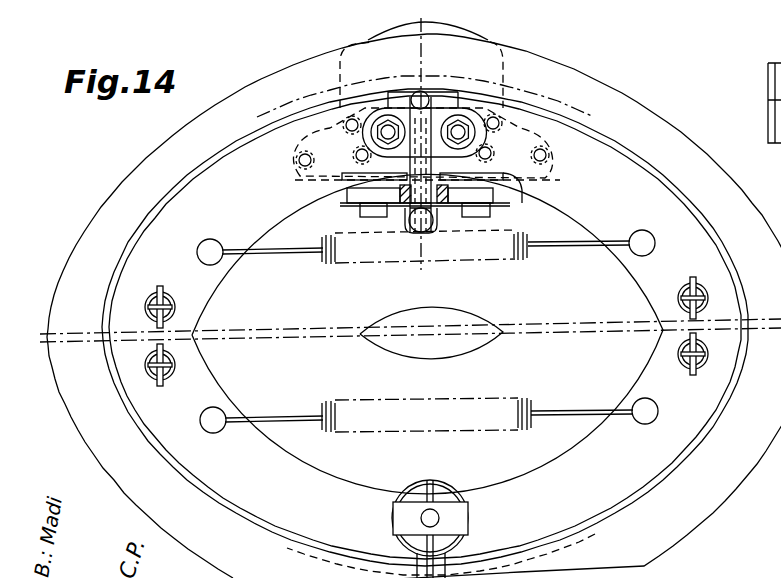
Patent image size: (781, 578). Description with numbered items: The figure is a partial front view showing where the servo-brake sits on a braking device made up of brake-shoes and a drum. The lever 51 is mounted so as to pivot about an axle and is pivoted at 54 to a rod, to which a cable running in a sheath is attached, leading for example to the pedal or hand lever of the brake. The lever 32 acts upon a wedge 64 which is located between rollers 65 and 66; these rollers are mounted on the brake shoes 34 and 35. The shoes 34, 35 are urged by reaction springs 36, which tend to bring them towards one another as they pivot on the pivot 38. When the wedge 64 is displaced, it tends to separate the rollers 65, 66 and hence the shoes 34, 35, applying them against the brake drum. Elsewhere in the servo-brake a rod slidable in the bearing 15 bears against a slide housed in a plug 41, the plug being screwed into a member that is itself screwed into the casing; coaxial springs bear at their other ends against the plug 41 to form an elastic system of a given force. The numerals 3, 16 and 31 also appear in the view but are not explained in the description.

The disc 3 is at (427, 334).
The bearing 15 is at (421, 65).
The section line 16 is at (296, 187).
The bolt 31 is at (427, 94).
The lever 32 is at (408, 165).
The brake shoe 34 is at (189, 310).
The brake shoe 35 is at (653, 298).
The reaction springs 36 is at (492, 252).
The pivot 38 is at (436, 519).
The plug 41 is at (766, 106).
The lever 51 is at (423, 232).
The pivot 54 is at (407, 228).
The wedge 64 is at (445, 204).
The roller 65 is at (354, 200).
The roller 66 is at (492, 195).